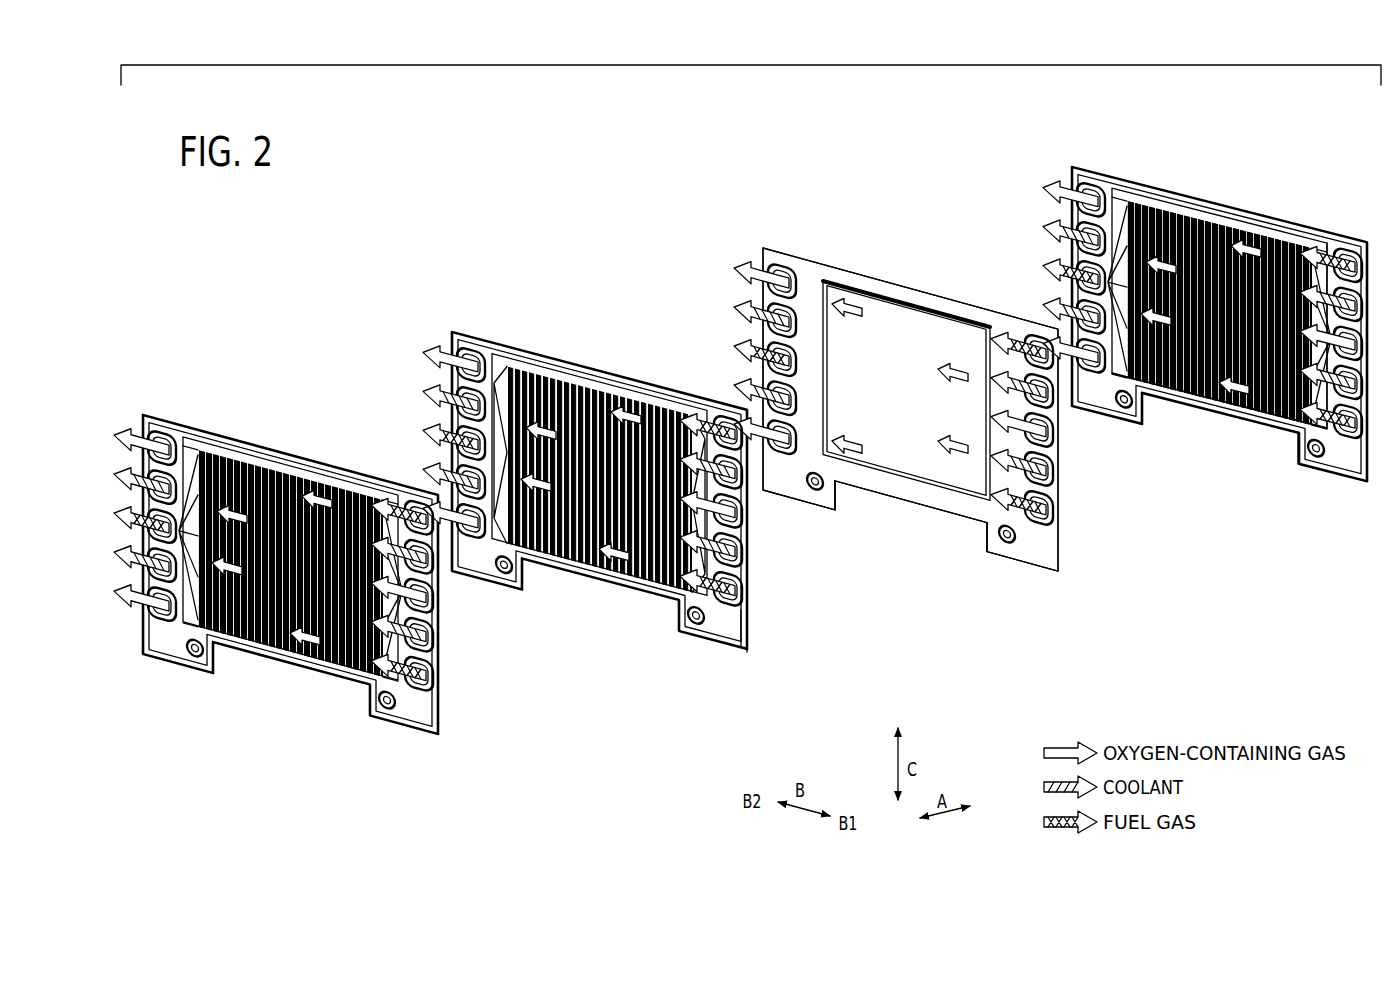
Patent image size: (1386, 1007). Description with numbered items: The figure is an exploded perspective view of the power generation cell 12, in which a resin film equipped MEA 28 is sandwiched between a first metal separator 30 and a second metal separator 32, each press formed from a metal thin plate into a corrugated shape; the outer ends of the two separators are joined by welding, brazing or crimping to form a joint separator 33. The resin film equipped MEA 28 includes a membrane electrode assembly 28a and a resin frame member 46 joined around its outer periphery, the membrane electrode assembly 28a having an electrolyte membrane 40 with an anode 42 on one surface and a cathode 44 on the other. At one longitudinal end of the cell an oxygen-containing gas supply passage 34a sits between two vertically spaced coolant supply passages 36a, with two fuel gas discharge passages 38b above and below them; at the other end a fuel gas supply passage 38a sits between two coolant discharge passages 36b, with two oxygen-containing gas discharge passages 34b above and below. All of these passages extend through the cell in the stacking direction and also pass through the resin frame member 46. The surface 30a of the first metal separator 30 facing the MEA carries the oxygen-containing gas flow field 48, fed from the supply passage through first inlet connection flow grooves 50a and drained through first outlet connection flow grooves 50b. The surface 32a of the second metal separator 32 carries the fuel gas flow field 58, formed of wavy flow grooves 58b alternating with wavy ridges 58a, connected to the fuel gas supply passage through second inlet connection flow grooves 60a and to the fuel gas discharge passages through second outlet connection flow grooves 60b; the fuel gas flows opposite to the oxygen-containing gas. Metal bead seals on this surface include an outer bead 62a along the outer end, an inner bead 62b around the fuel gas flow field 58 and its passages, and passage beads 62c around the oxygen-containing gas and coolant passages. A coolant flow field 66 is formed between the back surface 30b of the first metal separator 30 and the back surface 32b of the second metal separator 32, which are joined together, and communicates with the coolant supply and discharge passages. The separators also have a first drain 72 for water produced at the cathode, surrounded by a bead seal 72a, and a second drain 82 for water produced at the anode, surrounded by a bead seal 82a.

The power generation cell 12 is at (728, 232).
The resin film equipped MEA 28 is at (923, 194).
The membrane electrode assembly 28a is at (903, 292).
The first metal separator 30 is at (448, 332).
The surface of the first metal separator 30a is at (750, 622).
The surface of the first metal separator 30b is at (744, 648).
The second metal separator 32 is at (262, 438).
The surface of the second metal separator 32a is at (298, 642).
The surface of the second metal separator 32b is at (333, 650).
The joint separator 33 is at (243, 307).
The oxygen-containing gas supply passage 34a is at (430, 600).
The oxygen-containing gas discharge passages 34b is at (1120, 121).
The coolant supply passages 36a is at (432, 570).
The coolant discharge passages 36b is at (166, 478).
The fuel gas supply passage 38a is at (178, 520).
The fuel gas discharge passages 38b is at (1345, 250).
The electrolyte membrane 40 is at (927, 478).
The anode 42 is at (866, 285).
The cathode 44 is at (903, 470).
The resin frame member 46 is at (826, 277).
The oxygen-containing gas flow field 48 is at (618, 420).
The first inlet connection flow grooves 50a is at (700, 400).
The first outlet connection flow grooves 50b is at (495, 395).
The fuel gas flow field 58 is at (1263, 144).
The wavy ridges 58a is at (1180, 210).
The wavy flow grooves 58b is at (1225, 222).
The second inlet connection flow grooves 60a is at (205, 455).
The second outlet connection flow grooves 60b is at (380, 500).
The outer bead 62a is at (1298, 470).
The inner bead 62b is at (1240, 420).
The passage beads 62c is at (1300, 255).
The coolant flow field 66 is at (580, 400).
The first drain 72 is at (197, 658).
The bead seal 72a is at (216, 660).
The second drain 82 is at (387, 710).
The bead seal 82a is at (370, 712).